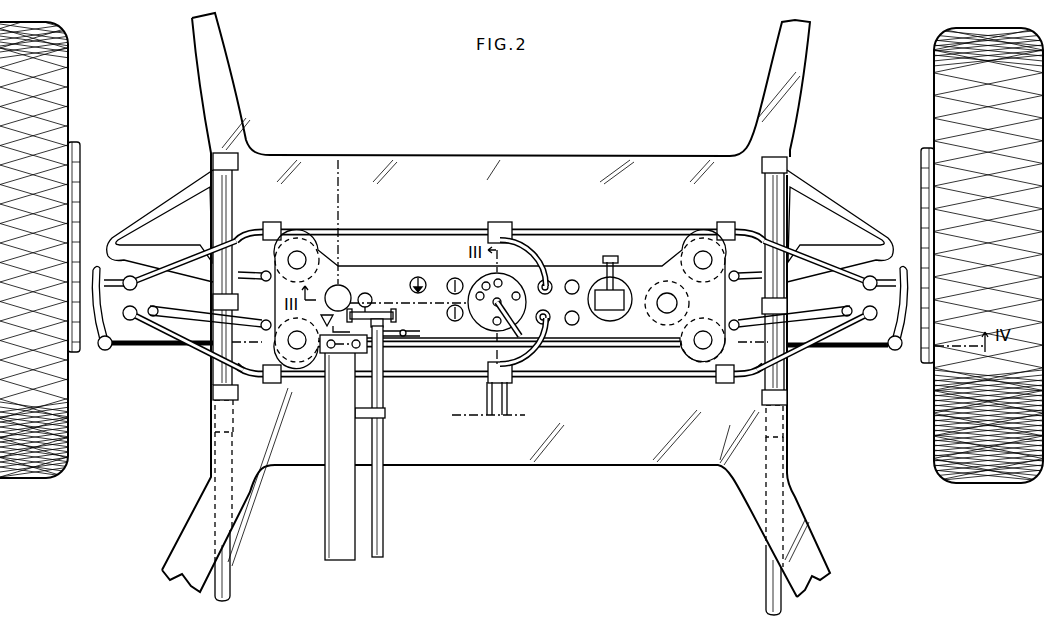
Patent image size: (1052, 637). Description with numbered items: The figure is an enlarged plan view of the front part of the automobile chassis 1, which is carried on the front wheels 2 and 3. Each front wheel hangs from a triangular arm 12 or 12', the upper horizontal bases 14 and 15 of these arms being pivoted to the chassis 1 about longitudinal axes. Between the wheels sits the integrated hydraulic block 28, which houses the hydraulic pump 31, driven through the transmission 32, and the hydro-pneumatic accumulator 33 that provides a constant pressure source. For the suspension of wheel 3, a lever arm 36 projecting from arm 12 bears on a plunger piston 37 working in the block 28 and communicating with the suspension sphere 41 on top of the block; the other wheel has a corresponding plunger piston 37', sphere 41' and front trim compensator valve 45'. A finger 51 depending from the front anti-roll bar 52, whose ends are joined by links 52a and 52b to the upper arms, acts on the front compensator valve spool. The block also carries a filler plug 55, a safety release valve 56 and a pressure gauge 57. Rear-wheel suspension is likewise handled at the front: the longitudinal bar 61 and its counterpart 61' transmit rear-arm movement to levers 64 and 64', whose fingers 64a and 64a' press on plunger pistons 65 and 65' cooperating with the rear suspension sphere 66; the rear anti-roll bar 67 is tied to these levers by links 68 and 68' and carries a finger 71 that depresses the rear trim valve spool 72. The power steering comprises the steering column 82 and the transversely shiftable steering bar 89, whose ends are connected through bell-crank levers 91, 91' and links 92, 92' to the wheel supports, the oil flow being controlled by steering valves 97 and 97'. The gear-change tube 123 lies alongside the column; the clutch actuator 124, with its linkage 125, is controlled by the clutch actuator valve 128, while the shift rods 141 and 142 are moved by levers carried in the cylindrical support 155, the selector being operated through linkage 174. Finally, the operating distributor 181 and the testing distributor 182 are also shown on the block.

The chassis 1 is at (232, 95).
The front wheel 2 is at (936, 86).
The front wheel 3 is at (60, 90).
The triangular arm 12 is at (160, 225).
The triangular arm 12' is at (840, 226).
The base of triangular arm 14 is at (233, 200).
The base of triangular arm 15 is at (762, 197).
The integrated hydraulic block 28 is at (380, 263).
The hydraulic pump 31 is at (620, 292).
The transmission 32 is at (616, 261).
The hydro-pneumatic accumulator 33 is at (680, 303).
The lever arm 36 is at (213, 230).
The plunger piston 37 is at (254, 260).
The plunger piston 37' is at (748, 260).
The suspension sphere 41 is at (366, 220).
The suspension sphere 41' is at (712, 223).
The compensator valve 45' is at (560, 275).
The finger 51 is at (538, 264).
The front anti-roll bar 52 is at (632, 231).
The link 52a is at (112, 238).
The link 52b is at (883, 268).
The filler plug 55 is at (575, 280).
The safety release valve 56 is at (582, 350).
The pressure gauge 57 is at (416, 275).
The longitudinal bar 61 is at (238, 385).
The strut tube 61' is at (756, 392).
The lever 64 is at (205, 333).
The lever 64' is at (795, 312).
The finger 64a is at (189, 344).
The lower rod 64a' is at (798, 364).
The plunger piston 65 is at (270, 310).
The lower link joint 65' is at (743, 310).
The rear suspension sphere 66 is at (268, 350).
The rear anti-roll bar 67 is at (645, 382).
The link 68 is at (125, 321).
The link 68' is at (885, 320).
The finger 71 is at (535, 358).
The valve spool 72 is at (548, 318).
The steering column 82 is at (326, 502).
The steering bar 89 is at (608, 378).
The bell-crank lever 91 is at (104, 303).
The bell-crank lever 91' is at (907, 322).
The link 92 is at (155, 359).
The link 92' is at (844, 357).
The steering valve 97 is at (366, 379).
The steering valve 97' is at (370, 351).
The tube 123 is at (386, 385).
The clutch actuator 124 is at (350, 295).
The linkage 125 is at (350, 216).
The clutch actuator valve 128 is at (385, 313).
The gear shift rod 141 is at (484, 412).
The gear shift rod 142 is at (508, 405).
The cylindrical support 155 is at (480, 325).
The linkage 174 is at (458, 340).
The operating distributor 181 is at (452, 316).
The testing distributor 182 is at (455, 275).